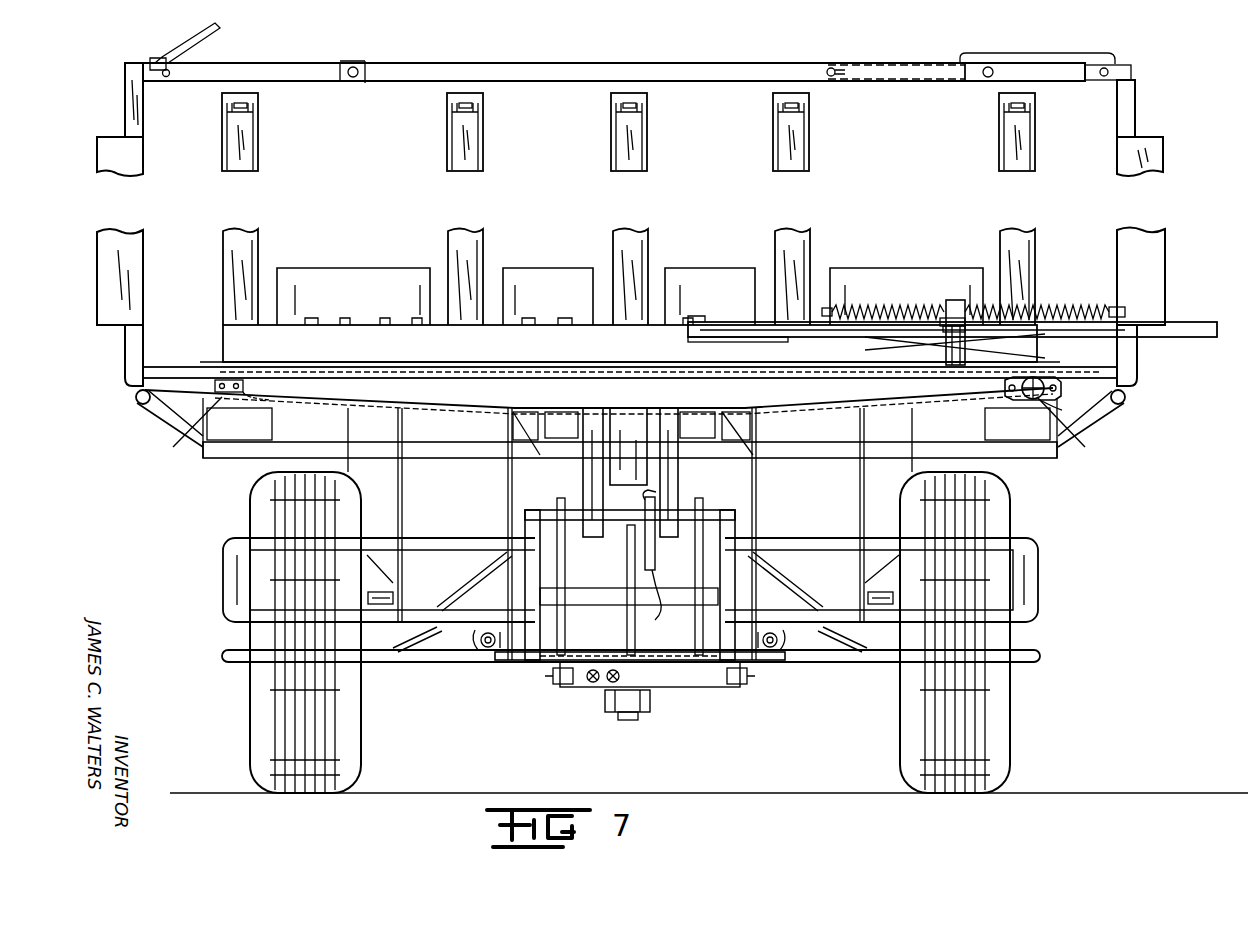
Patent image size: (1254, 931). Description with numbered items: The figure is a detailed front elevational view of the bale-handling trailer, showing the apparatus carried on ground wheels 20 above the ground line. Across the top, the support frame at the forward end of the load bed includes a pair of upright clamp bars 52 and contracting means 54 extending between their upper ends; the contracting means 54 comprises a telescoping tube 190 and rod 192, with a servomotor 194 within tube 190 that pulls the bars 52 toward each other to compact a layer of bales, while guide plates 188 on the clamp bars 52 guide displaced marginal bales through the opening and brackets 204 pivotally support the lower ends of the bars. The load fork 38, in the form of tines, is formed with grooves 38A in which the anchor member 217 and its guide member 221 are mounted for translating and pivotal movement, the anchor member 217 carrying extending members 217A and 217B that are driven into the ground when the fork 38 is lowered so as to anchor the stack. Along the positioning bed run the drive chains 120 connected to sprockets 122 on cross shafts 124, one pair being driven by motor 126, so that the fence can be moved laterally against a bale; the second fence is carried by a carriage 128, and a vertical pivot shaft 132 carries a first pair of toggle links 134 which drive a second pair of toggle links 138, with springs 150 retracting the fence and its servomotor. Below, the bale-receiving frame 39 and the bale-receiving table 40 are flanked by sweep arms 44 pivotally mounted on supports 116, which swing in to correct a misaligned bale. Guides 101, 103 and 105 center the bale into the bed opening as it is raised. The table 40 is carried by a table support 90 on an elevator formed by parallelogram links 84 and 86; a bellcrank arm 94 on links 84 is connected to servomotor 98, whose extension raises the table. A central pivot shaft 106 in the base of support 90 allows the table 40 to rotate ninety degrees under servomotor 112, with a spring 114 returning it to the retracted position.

The ground wheels 20 is at (250, 693).
The load fork 38 is at (258, 245).
The grooves 38A is at (258, 110).
The bale-receiving frame 39 is at (815, 640).
The bale-receiving table 40 is at (655, 652).
The sweep arms 44 is at (225, 572).
The upright clamp bars 52 is at (122, 105).
The contracting means 54 is at (712, 62).
The parallelogram links 84 is at (697, 572).
The parallelogram link 86 is at (645, 550).
The table support 90 is at (700, 688).
The bellcrank arm 94 is at (645, 600).
The servomotor 98 is at (640, 535).
The guide 101 is at (520, 425).
The guide 103 is at (630, 420).
The guide 105 is at (560, 418).
The central pivot shaft 106 is at (640, 688).
The servomotor 112 is at (610, 682).
The spring 114 is at (590, 682).
The supports 116 is at (520, 640).
The drive chains 120 is at (290, 412).
The sprockets 122 is at (190, 432).
The cross shafts 124 is at (1044, 399).
The motor 126 is at (1045, 380).
The carriage 128 is at (935, 353).
The vertical pivot shaft 132 is at (950, 340).
The first pair of toggle links 134 is at (733, 318).
The second pair of toggle links 138 is at (770, 337).
The springs 150 is at (862, 305).
The guide plates 188 is at (97, 295).
The telescoping tube 190 is at (735, 82).
The rod 192 is at (1091, 82).
The servomotor 194 is at (880, 50).
The brackets 204 is at (136, 410).
The anchor member 217 is at (492, 354).
The extending members 217A is at (340, 268).
The extending members 217B is at (540, 268).
The guide member 221 is at (390, 360).